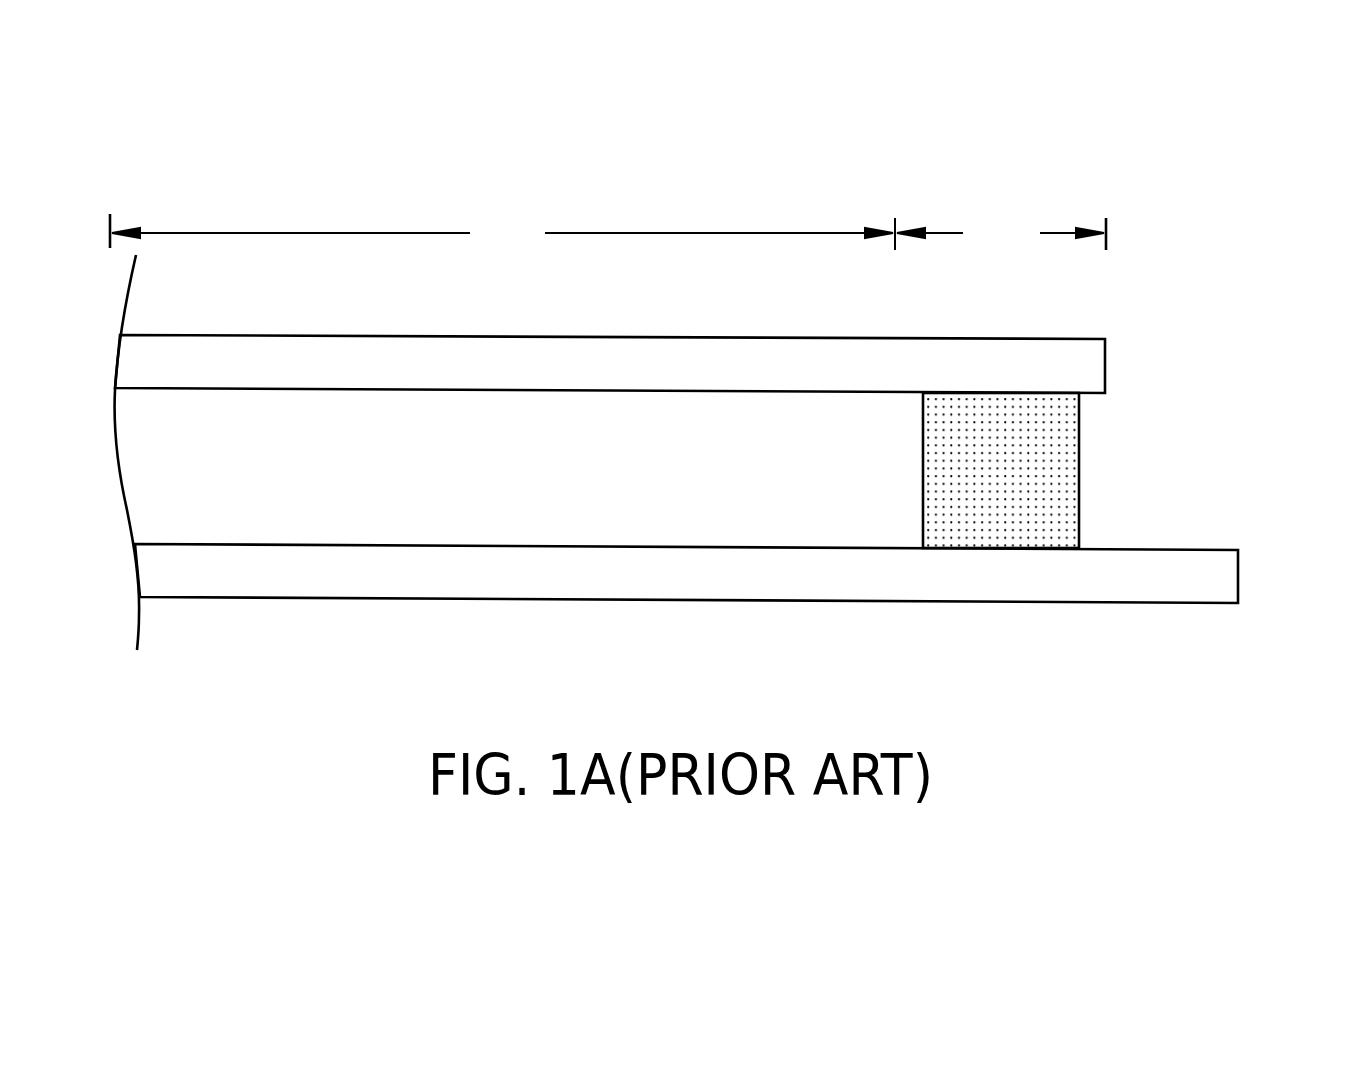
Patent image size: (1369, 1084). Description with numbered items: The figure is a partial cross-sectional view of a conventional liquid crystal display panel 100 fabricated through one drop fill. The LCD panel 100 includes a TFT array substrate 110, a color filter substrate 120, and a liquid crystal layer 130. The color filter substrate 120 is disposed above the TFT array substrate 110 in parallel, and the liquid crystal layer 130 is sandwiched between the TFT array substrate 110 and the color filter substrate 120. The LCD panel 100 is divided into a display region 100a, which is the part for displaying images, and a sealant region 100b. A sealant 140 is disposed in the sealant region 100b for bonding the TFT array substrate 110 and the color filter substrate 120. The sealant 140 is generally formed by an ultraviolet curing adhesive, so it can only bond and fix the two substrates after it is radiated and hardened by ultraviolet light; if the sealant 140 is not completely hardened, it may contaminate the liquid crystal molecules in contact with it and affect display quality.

The LCD panel 100 is at (1357, 737).
The display region 100a is at (502, 233).
The sealant region 100b is at (1001, 233).
The TFT array substrate 110 is at (1228, 583).
The color filter substrate 120 is at (1098, 368).
The liquid crystal layer 130 is at (125, 452).
The sealant 140 is at (1072, 486).